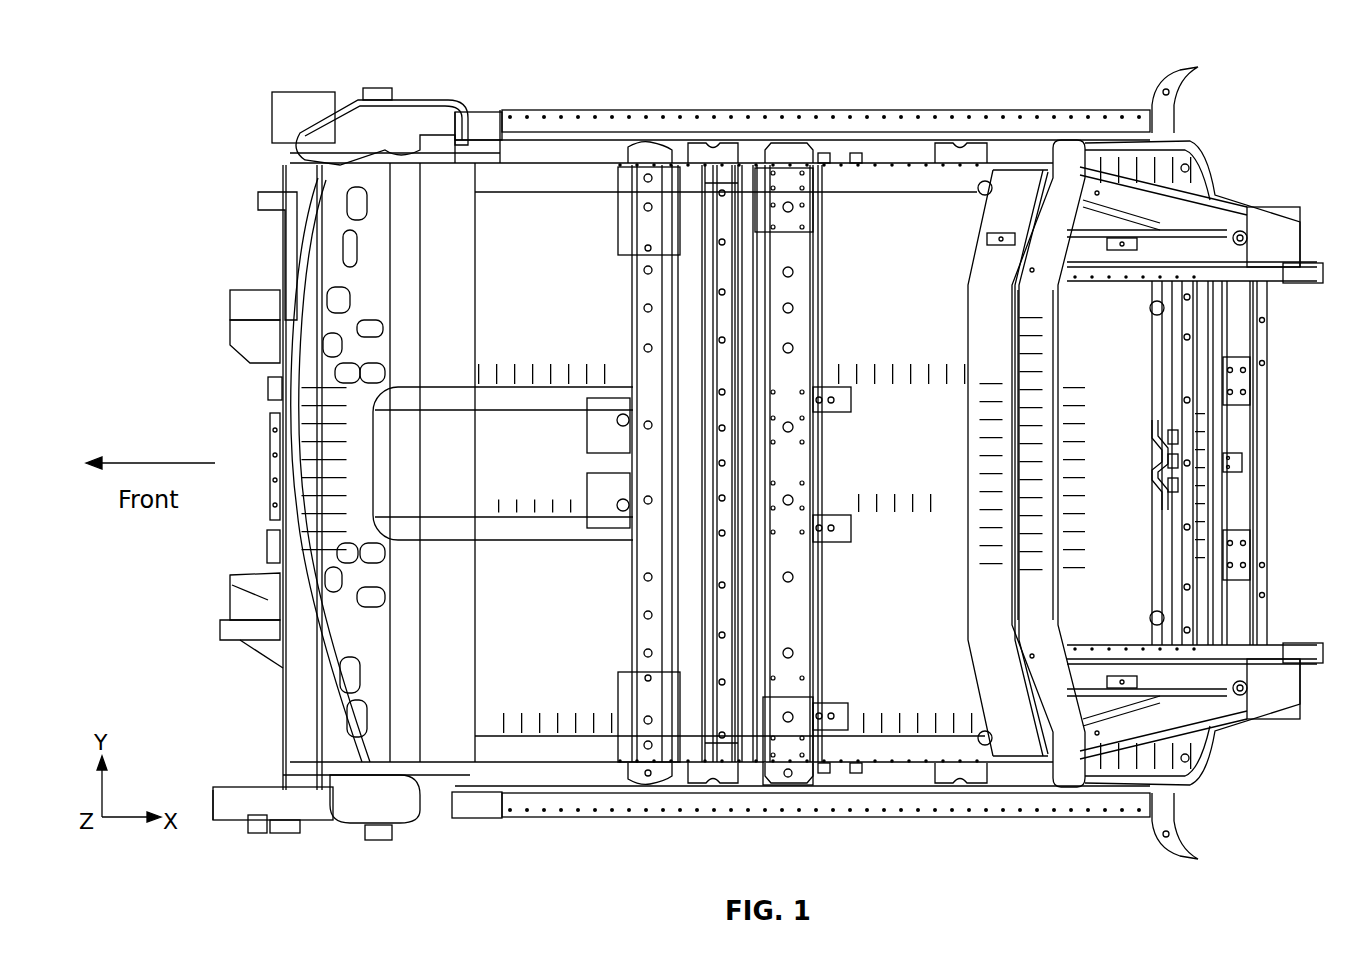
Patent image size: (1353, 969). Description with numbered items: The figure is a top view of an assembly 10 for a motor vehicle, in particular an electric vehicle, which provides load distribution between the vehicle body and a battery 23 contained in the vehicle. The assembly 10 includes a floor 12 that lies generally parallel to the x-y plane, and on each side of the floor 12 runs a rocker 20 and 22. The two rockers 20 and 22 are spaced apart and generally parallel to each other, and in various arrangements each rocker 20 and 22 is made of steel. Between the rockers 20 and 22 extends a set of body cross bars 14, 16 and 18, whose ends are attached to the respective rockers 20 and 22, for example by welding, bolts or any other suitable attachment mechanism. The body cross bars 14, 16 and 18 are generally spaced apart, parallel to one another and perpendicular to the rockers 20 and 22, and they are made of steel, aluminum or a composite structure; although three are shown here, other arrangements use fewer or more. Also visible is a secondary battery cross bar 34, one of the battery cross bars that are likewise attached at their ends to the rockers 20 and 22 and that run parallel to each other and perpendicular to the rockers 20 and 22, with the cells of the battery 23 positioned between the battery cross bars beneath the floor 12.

The assembly 10 is at (276, 55).
The floor 12 is at (913, 250).
The body cross bar 14 is at (643, 185).
The body cross bar 16 is at (723, 187).
The body cross bar 18 is at (780, 187).
The rocker 20 is at (890, 783).
The rocker 22 is at (898, 143).
The battery 23 is at (1135, 470).
The secondary battery cross bar 34 is at (1187, 347).